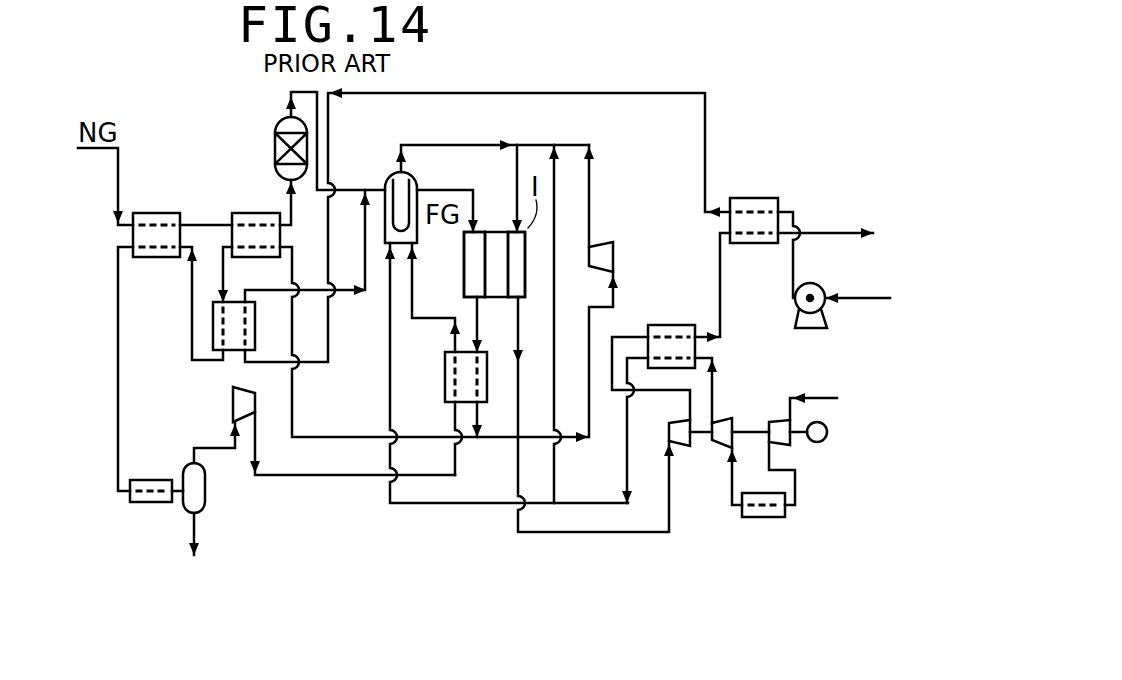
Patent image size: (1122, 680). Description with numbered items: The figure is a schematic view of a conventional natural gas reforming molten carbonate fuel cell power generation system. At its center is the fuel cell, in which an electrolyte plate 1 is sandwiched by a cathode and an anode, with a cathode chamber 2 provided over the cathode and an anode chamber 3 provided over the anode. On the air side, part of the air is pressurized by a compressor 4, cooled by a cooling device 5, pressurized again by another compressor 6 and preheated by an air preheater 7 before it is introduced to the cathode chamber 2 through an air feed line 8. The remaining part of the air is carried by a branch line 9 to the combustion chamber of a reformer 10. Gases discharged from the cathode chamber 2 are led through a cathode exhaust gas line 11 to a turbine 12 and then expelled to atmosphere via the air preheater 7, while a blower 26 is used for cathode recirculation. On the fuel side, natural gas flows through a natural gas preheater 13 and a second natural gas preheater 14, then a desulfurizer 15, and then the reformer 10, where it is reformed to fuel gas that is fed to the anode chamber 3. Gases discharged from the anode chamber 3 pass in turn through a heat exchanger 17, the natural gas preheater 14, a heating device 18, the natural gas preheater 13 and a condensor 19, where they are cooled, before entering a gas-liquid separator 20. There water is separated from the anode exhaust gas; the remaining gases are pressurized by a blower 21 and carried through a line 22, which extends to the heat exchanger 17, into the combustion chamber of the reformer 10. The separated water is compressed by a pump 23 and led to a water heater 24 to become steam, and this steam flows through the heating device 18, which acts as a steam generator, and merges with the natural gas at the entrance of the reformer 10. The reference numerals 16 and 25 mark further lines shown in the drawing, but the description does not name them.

The electrolyte plate 1 is at (494, 246).
The cathode chamber 2 is at (525, 280).
The anode chamber 3 is at (464, 276).
The compressor 4 is at (785, 440).
The cooling device 5 is at (760, 517).
The compressor 6 is at (724, 418).
The air preheater 7 is at (672, 325).
The air feed line 8 is at (555, 362).
The branch line 9 is at (440, 505).
The reformer 10 is at (385, 186).
The cathode exhaust gas line 11 is at (580, 533).
The turbine 12 is at (682, 437).
The natural gas preheater 13 is at (196, 186).
The natural gas preheater 14 is at (262, 185).
The desulfurizer 15 is at (275, 150).
The fuel gas line 16 is at (447, 192).
The heat exchanger 17 is at (445, 378).
The heating device 18 is at (213, 330).
The condensor 19 is at (160, 503).
The gas-liquid separator 20 is at (206, 490).
The blower 21 is at (235, 400).
The line 22 is at (320, 478).
The pump 23 is at (797, 306).
The water heater 24 is at (757, 198).
The recycle line 25 is at (572, 93).
The blower 26 is at (600, 247).